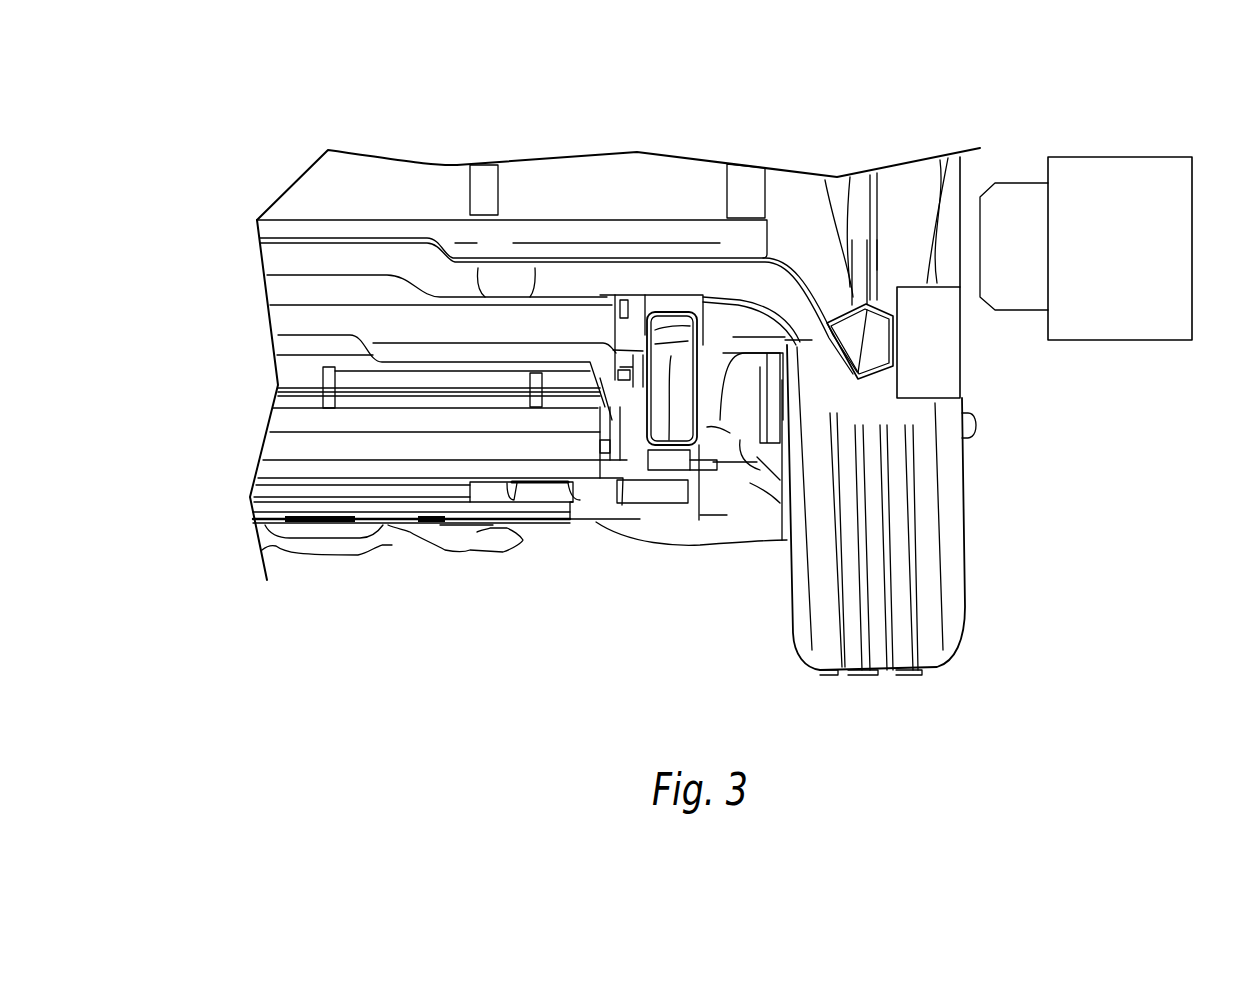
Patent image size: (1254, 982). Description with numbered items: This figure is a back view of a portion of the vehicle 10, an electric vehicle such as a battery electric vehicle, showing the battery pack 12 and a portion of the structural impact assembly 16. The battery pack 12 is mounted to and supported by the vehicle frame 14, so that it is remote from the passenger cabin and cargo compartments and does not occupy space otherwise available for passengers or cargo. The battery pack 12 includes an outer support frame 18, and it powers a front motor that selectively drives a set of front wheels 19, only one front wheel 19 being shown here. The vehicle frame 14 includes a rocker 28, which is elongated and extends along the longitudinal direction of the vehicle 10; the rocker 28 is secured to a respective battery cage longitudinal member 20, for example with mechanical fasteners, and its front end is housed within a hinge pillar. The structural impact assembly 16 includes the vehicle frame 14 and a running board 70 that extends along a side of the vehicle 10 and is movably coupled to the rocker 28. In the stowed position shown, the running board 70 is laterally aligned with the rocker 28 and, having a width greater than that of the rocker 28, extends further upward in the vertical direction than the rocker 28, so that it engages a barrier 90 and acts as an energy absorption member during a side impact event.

The vehicle 10 is at (466, 98).
The battery pack 12 is at (403, 452).
The vehicle frame 14 is at (284, 258).
The structural impact assembly 16 is at (996, 424).
The outer support frame 18 is at (634, 438).
The front wheel 19 is at (900, 560).
The battery cage longitudinal member 20 is at (700, 418).
The rocker 28 is at (851, 296).
The running board 70 is at (933, 364).
The barrier 90 is at (1137, 175).